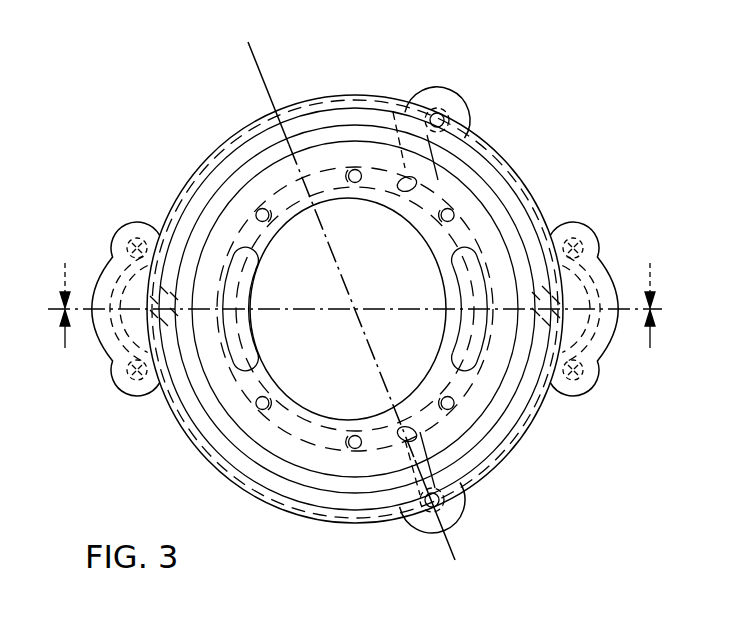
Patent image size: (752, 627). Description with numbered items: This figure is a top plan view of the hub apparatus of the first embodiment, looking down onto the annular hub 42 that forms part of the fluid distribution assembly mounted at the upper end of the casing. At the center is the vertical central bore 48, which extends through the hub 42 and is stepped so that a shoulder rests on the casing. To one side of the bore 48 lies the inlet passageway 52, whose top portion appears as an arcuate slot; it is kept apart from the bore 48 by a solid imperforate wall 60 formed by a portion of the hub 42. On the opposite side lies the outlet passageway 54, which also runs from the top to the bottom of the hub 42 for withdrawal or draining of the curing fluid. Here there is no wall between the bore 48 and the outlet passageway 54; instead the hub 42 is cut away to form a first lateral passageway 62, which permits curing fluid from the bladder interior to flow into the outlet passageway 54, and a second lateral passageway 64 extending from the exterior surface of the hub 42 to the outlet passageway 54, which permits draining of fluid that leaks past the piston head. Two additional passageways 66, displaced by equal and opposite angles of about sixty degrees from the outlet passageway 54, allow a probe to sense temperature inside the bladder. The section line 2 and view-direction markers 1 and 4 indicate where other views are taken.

The hub 42 is at (520, 158).
The central bore 48 is at (306, 404).
The inlet passageway 52 is at (228, 296).
The outlet passageway 54 is at (480, 300).
The wall 60 is at (232, 342).
The first lateral passageway 62 is at (462, 258).
The second lateral passageway 64 is at (470, 362).
The passageways 66 is at (395, 101).
The section line 2- 2 is at (264, 46).
The view direction 1 is at (358, 275).
The view direction 4 is at (357, 340).